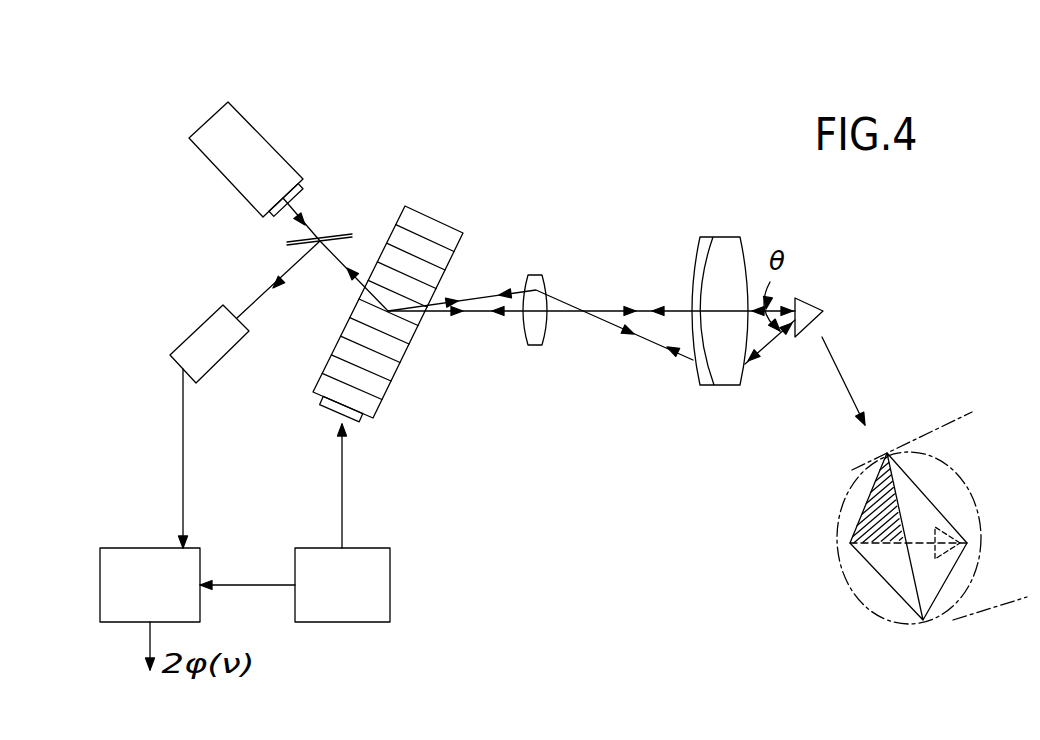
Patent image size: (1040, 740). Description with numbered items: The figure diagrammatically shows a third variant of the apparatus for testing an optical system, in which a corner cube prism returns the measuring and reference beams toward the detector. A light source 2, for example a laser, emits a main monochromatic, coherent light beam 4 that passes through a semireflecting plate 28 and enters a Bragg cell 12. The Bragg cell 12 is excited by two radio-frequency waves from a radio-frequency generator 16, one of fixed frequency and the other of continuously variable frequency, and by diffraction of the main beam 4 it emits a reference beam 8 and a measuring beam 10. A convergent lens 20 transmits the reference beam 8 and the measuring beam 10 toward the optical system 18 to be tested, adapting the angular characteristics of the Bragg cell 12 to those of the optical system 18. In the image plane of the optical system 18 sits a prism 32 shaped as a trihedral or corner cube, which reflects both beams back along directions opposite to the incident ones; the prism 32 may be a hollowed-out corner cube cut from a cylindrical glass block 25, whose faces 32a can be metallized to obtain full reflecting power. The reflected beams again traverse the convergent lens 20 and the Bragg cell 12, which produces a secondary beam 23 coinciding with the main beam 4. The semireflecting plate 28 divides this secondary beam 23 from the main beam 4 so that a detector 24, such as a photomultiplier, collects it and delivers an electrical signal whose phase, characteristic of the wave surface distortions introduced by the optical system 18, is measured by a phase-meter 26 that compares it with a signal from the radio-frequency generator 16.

The light source 2 is at (266, 156).
The main light beam 4 is at (300, 212).
The semireflecting plate 28 is at (341, 235).
The Bragg cell 12 is at (435, 224).
The secondary beam 23 is at (248, 306).
The detector 24 is at (202, 355).
The phase-measuring device 26 is at (165, 597).
The radio-frequency generator 16 is at (363, 597).
The reference beam 8 is at (647, 310).
The measuring beam 10 is at (647, 338).
The convergent lens 20 is at (535, 273).
The optical system 18 is at (705, 233).
The corner cube prism 32 is at (807, 293).
The faces of the corner cube 32a is at (858, 524).
The cylindrical glass block 25 is at (968, 608).